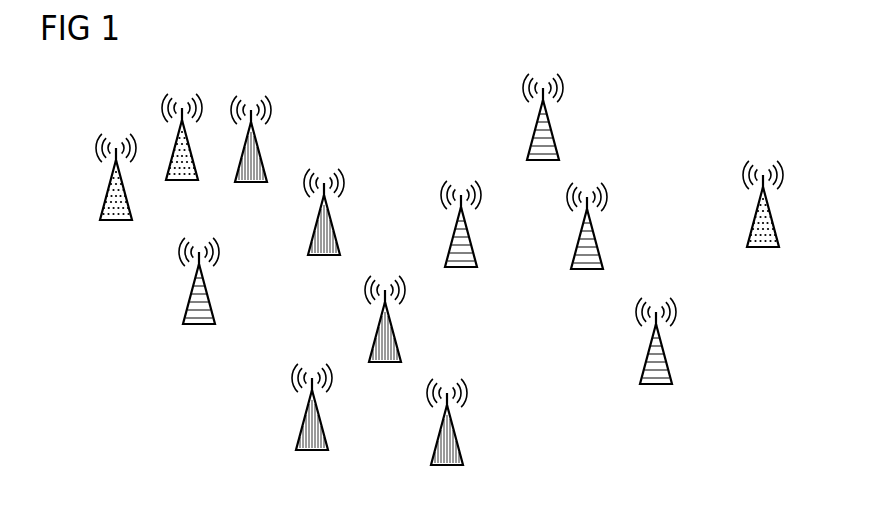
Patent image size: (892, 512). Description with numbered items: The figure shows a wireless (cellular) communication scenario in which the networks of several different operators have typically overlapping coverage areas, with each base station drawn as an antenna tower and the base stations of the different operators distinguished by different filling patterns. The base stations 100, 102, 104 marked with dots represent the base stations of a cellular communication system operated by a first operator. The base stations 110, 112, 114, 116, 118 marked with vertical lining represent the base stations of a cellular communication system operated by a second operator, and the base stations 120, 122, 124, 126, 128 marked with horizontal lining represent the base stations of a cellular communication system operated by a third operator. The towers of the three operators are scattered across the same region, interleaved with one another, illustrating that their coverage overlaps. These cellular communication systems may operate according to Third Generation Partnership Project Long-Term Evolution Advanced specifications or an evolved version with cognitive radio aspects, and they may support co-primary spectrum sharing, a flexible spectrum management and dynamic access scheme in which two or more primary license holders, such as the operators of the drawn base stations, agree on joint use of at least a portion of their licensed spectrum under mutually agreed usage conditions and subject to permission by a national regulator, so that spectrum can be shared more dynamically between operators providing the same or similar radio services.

The base station 100 is at (108, 190).
The base station 102 is at (174, 147).
The base station 104 is at (755, 217).
The base station 110 is at (259, 152).
The base station 112 is at (316, 224).
The base station 114 is at (377, 331).
The base station 116 is at (304, 419).
The base station 118 is at (439, 434).
The base station 120 is at (191, 293).
The base station 122 is at (453, 236).
The base station 124 is at (535, 129).
The base station 126 is at (579, 238).
The base station 128 is at (648, 353).